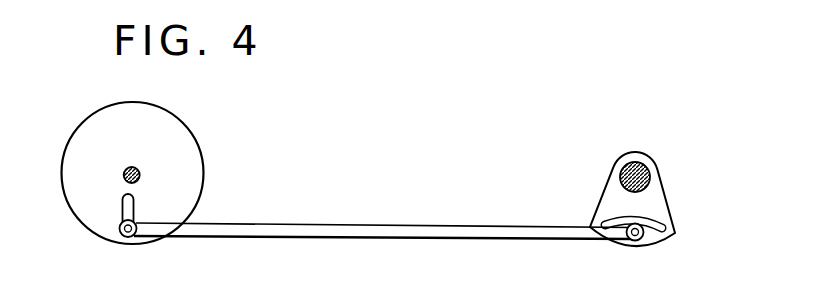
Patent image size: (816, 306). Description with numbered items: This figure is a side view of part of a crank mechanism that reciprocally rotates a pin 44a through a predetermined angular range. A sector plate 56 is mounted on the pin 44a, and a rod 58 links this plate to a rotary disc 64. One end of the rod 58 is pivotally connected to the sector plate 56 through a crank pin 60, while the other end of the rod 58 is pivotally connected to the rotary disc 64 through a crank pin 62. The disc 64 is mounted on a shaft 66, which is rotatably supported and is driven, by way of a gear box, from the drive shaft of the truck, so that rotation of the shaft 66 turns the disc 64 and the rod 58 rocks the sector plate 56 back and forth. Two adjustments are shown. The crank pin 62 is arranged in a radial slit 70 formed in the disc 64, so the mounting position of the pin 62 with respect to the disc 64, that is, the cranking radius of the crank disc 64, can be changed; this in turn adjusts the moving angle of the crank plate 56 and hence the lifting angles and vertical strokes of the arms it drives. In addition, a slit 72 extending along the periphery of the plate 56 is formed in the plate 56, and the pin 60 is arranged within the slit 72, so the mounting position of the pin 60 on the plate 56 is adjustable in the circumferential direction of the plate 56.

The pin 44a is at (632, 163).
The sector plate 56 is at (657, 203).
The rod 58 is at (378, 227).
The crank pin 60 is at (633, 242).
The crank pin 62 is at (126, 244).
The rotary disc 64 is at (188, 130).
The shaft 66 is at (123, 172).
The radial slit 70 is at (135, 210).
The slit 72 is at (658, 233).